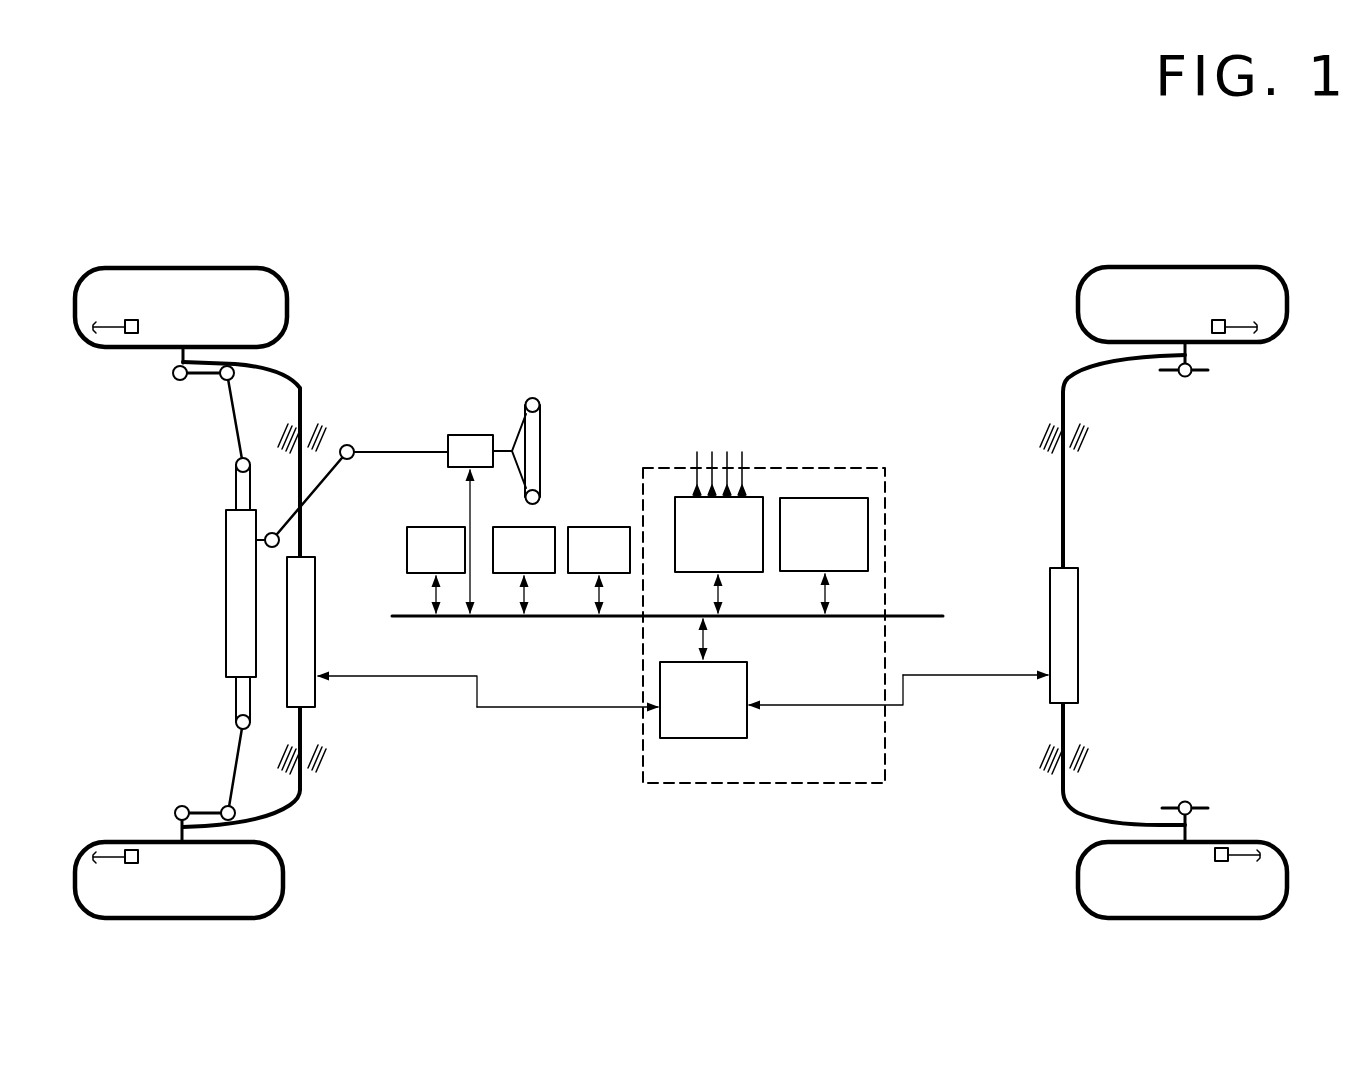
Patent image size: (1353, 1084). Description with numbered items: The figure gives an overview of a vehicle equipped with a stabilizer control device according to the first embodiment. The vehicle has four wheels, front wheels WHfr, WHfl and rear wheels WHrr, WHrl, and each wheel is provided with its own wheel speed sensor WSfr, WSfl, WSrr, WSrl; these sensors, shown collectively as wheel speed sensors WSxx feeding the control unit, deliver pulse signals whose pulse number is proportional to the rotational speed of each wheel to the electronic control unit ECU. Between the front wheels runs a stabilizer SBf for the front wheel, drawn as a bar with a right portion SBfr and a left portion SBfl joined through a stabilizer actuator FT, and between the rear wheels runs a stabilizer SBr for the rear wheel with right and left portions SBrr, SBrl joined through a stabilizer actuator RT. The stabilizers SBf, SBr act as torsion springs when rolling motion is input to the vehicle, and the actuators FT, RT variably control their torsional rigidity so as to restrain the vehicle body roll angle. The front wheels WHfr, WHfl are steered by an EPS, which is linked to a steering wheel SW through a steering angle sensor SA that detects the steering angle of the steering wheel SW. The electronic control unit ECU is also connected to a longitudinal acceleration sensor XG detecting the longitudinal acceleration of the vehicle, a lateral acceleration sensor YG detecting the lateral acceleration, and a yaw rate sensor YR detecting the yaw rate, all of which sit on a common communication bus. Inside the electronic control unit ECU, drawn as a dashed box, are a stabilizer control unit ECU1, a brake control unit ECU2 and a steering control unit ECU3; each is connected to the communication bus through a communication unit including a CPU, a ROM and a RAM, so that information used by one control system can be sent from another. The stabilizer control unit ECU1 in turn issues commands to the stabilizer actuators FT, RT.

The front right wheel WHfr is at (181, 315).
The front left wheel WHfl is at (179, 868).
The rear right wheel WHrr is at (1182, 315).
The rear left wheel WHrl is at (1182, 866).
The wheel speed sensor WSfr is at (110, 347).
The wheel speed sensor WSfl is at (110, 838).
The wheel speed sensor WSrr is at (1210, 348).
The wheel speed sensor WSrl is at (1211, 832).
The wheel speed sensors WSxx is at (716, 461).
The stabilizer for front wheel SBf is at (290, 562).
The front right stabilizer bar SBfr is at (304, 384).
The front left stabilizer bar SBfl is at (304, 788).
The stabilizer for rear wheel SBr is at (1066, 560).
The rear right stabilizer bar SBrr is at (1060, 374).
The rear left stabilizer bar SBrl is at (1062, 795).
The stabilizer actuator FT is at (317, 606).
The stabilizer actuator RT is at (1080, 580).
The element EPS is at (226, 548).
The steering wheel SW is at (528, 399).
The steering angle sensor SA is at (423, 524).
The yaw rate sensor YR is at (436, 570).
The longitudinal acceleration sensor XG is at (524, 570).
The lateral acceleration sensor YG is at (599, 570).
The electronic control unit ECU is at (764, 604).
The stabilizer control unit ECU1 is at (703, 678).
The brake control unit ECU2 is at (719, 555).
The steering control unit ECU3 is at (824, 555).